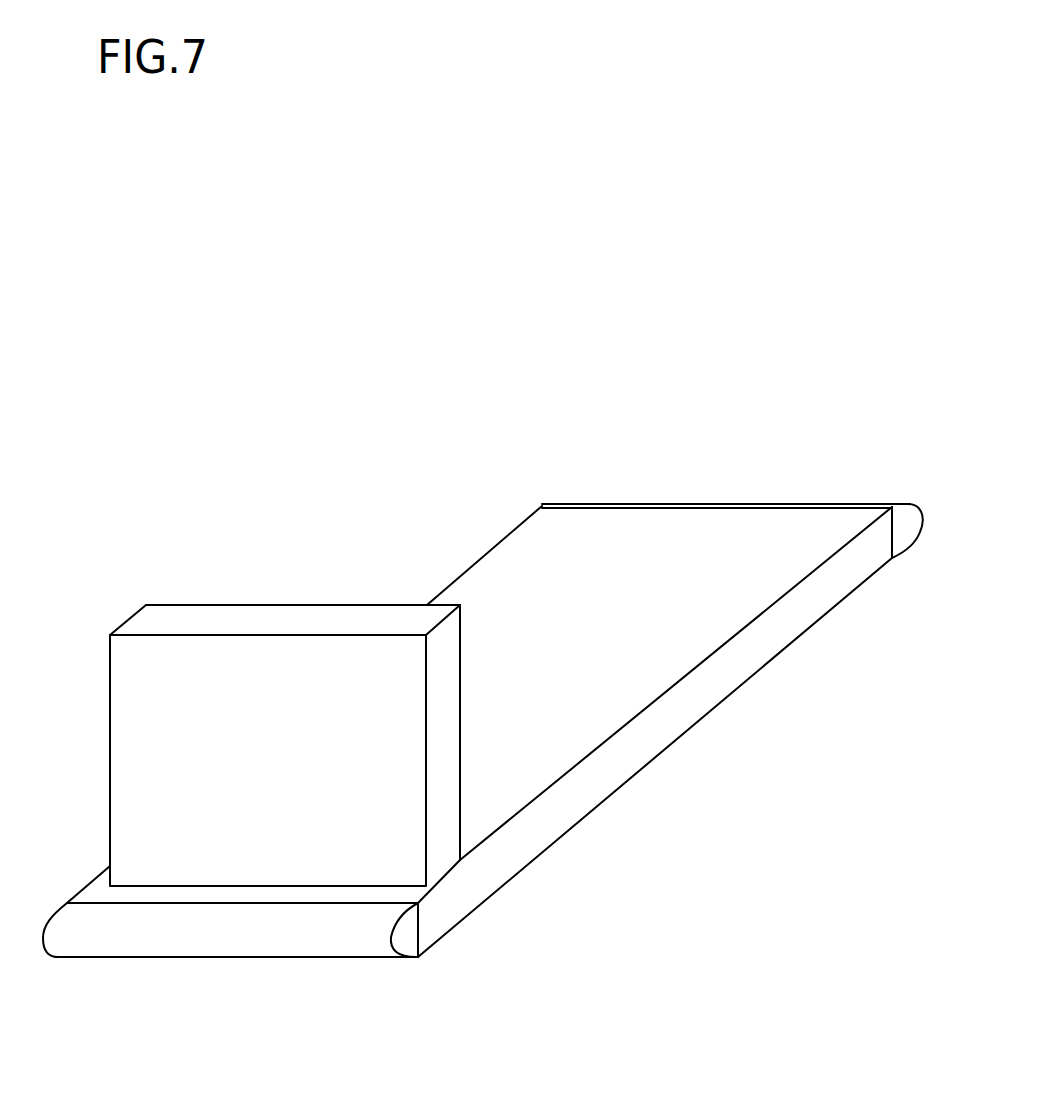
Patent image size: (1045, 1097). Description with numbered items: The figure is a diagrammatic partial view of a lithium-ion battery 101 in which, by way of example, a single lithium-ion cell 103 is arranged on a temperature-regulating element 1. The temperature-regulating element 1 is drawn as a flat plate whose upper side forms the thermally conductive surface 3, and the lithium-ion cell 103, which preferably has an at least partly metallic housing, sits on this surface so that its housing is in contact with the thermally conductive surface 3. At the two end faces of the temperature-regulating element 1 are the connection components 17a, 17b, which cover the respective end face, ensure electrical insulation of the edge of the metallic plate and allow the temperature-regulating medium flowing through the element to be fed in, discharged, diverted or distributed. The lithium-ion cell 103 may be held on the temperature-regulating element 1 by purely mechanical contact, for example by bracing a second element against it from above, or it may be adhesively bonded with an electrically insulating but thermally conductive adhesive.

The lithium-ion battery 101 is at (483, 612).
The temperature-regulating element 1 is at (483, 684).
The thermally conductive surface 3 is at (573, 617).
The connection component 17a is at (254, 948).
The connection component 17b is at (903, 520).
The lithium-ion cell 103 is at (295, 764).